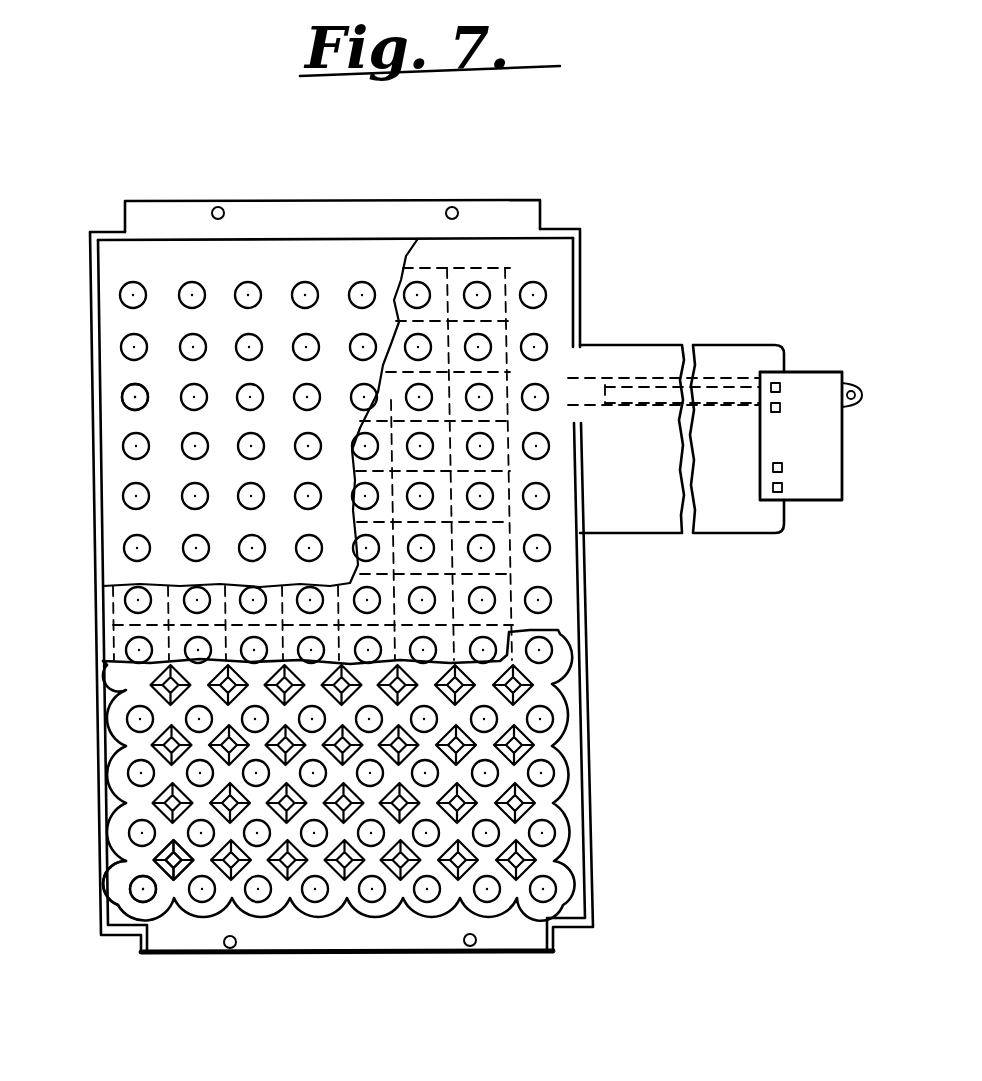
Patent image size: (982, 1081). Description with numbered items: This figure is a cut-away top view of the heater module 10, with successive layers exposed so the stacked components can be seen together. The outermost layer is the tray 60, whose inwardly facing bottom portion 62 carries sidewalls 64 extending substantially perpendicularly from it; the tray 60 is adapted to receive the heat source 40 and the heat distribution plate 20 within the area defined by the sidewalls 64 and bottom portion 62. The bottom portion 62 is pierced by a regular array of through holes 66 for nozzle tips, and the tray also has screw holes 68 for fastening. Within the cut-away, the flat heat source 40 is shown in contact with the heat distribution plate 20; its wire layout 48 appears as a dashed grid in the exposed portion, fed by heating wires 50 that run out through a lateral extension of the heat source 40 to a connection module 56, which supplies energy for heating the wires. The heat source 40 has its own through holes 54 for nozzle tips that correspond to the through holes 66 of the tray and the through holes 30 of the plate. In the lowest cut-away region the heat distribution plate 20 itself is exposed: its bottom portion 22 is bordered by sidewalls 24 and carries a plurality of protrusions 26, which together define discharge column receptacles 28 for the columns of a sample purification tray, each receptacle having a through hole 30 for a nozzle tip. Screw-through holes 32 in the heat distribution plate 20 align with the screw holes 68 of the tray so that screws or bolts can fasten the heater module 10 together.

The heater module 10 is at (640, 216).
The heat distribution plate 20 is at (568, 798).
The bottom portion 22 is at (560, 840).
The sidewalls 24 is at (565, 887).
The protrusions 26 is at (168, 872).
The discharge column receptacles 28 is at (130, 882).
The through hole for a nozzle tip 30 is at (146, 893).
The screw-through holes 32 is at (232, 950).
The heat source 40 is at (602, 342).
The wire layout 48 is at (440, 253).
The heating wires 50 is at (620, 378).
The through holes for nozzle tips 54 is at (553, 597).
The connection module 56 is at (803, 395).
The tray 60 is at (195, 222).
The bottom portion 62 is at (130, 265).
The sidewalls 64 is at (96, 335).
The through holes for nozzle tips 66 is at (132, 398).
The screw holes 68 is at (228, 215).